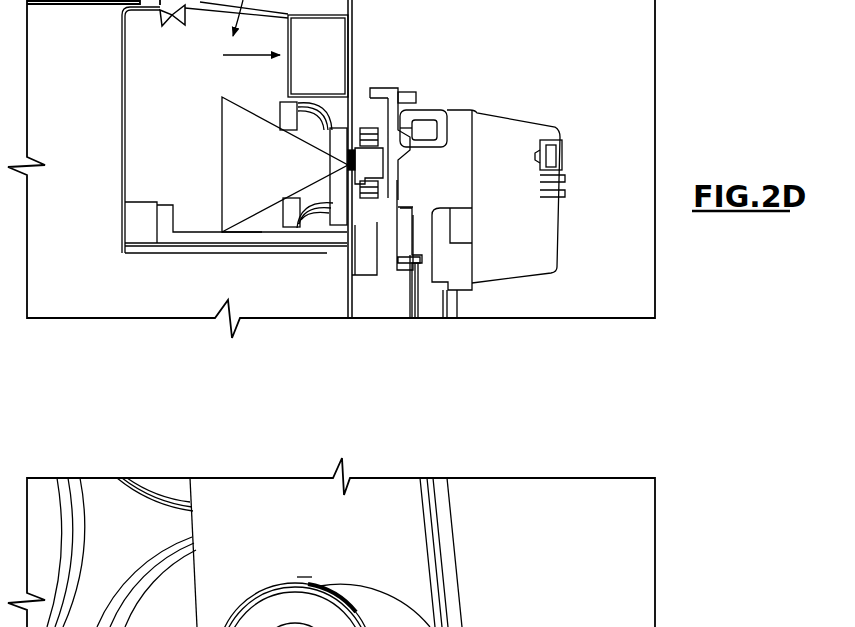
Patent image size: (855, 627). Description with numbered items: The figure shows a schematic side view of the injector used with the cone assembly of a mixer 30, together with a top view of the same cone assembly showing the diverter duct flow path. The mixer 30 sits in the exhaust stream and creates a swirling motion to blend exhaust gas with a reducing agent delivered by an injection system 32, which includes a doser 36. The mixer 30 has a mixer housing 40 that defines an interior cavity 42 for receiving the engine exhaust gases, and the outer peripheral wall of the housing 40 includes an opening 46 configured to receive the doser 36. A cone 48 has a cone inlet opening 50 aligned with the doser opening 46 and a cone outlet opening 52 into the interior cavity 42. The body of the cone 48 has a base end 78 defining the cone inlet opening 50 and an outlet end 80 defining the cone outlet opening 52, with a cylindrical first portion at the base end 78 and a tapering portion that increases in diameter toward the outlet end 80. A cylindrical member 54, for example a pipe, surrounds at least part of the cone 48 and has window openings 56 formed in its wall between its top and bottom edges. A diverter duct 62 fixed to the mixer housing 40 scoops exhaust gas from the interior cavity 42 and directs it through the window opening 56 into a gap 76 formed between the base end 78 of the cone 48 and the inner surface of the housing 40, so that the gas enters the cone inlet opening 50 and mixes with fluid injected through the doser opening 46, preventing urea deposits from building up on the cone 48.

In FIG. 2D, the mixer 30 is at (432, 62).
In FIG. 2D, the injection system 32 is at (527, 103).
In FIG. 2D, the doser 36 is at (375, 160).
In FIG. 2E, the mixer housing 40 is at (430, 543).
In FIG. 2E, the interior cavity 42 is at (393, 512).
In FIG. 2D, the opening 46 is at (352, 117).
In FIG. 2D, the cone 48 is at (306, 230).
In FIG. 2E, the cone 48 is at (263, 617).
In FIG. 2D, the cone inlet opening 50 is at (343, 195).
In FIG. 2D, the cone outlet opening 52 is at (285, 108).
In FIG. 2D, the cylindrical member 54 is at (316, 230).
In FIG. 2E, the window opening 56 is at (339, 585).
In FIG. 2D, the diverter duct 62 is at (335, 40).
In FIG. 2E, the diverter duct 62 is at (379, 597).
In FIG. 2D, the gap 76 is at (355, 200).
In FIG. 2D, the base end 78 is at (328, 126).
In FIG. 2D, the outlet end 80 is at (290, 101).